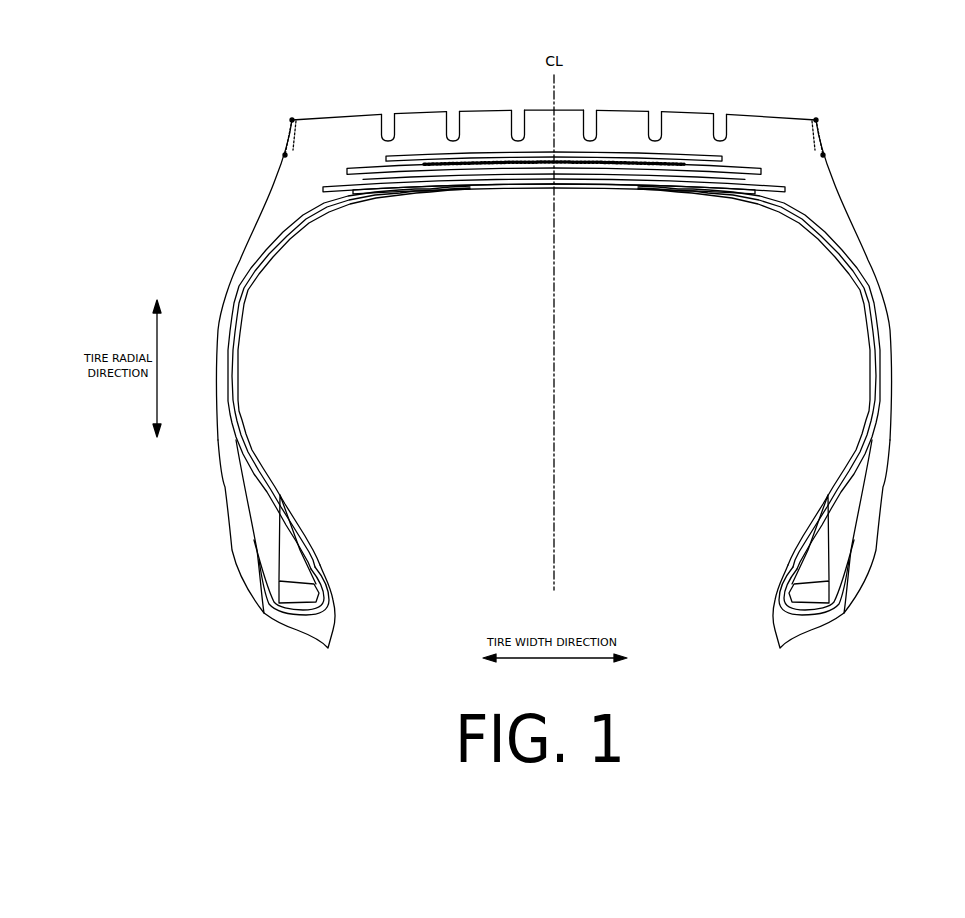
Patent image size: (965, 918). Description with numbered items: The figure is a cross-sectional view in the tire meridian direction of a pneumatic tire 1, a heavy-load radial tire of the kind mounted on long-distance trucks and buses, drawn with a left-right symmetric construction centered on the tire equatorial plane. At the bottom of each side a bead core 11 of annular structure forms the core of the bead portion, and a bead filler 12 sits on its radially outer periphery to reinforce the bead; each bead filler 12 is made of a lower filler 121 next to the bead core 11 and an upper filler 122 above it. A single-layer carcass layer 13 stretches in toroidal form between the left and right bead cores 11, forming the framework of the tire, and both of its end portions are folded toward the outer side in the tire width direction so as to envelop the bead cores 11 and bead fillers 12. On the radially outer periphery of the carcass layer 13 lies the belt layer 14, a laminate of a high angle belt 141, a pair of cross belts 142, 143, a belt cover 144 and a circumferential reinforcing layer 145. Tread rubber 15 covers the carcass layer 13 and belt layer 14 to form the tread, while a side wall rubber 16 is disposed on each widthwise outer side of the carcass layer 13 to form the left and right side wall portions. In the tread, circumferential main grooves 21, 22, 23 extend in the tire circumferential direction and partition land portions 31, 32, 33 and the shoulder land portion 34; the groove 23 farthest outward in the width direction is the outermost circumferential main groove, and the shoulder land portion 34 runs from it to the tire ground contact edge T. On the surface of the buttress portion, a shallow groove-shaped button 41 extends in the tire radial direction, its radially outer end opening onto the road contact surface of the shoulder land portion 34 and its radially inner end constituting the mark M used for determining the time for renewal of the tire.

The pneumatic tire 1 is at (857, 106).
The bead core 11 is at (290, 593).
The bead filler 12 is at (170, 515).
The lower filler 121 is at (290, 551).
The upper filler 122 is at (263, 521).
The carcass layer 13 is at (782, 214).
The belt layer 14 is at (593, 241).
The high angle belt 141 is at (745, 190).
The cross belt 142 is at (717, 181).
The cross belt 143 is at (675, 178).
The belt cover 144 is at (647, 170).
The circumferential reinforcing layer 145 is at (609, 160).
The tread rubber 15 is at (673, 110).
The side wall rubber 16 is at (263, 212).
The circumferential main groove 21 is at (518, 127).
The circumferential main groove 22 is at (452, 127).
The outermost circumferential main groove 23 is at (387, 127).
The land portion 31 is at (568, 111).
The land portion 32 is at (487, 111).
The land portion 33 is at (414, 113).
The shoulder land portion 34 is at (340, 114).
The button 41 is at (287, 134).
The tire ground contact edge T is at (291, 118).
The mark M is at (283, 154).